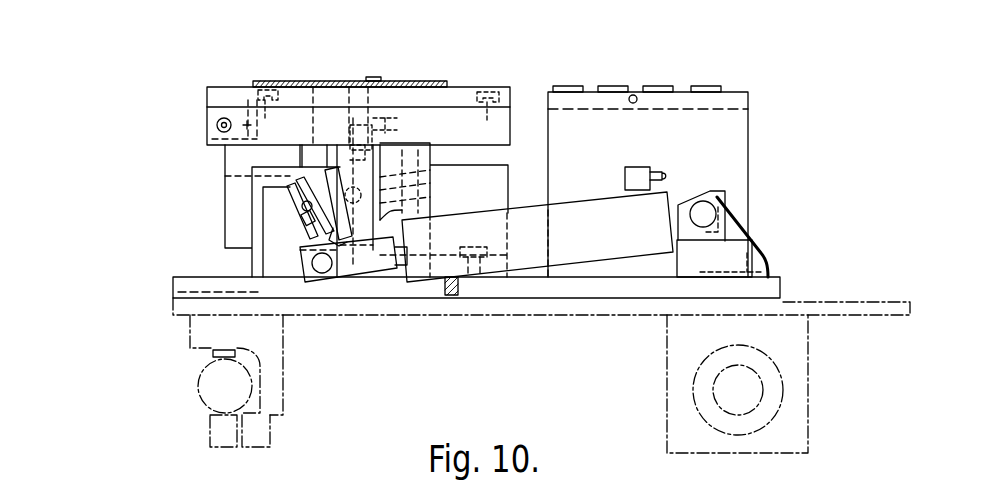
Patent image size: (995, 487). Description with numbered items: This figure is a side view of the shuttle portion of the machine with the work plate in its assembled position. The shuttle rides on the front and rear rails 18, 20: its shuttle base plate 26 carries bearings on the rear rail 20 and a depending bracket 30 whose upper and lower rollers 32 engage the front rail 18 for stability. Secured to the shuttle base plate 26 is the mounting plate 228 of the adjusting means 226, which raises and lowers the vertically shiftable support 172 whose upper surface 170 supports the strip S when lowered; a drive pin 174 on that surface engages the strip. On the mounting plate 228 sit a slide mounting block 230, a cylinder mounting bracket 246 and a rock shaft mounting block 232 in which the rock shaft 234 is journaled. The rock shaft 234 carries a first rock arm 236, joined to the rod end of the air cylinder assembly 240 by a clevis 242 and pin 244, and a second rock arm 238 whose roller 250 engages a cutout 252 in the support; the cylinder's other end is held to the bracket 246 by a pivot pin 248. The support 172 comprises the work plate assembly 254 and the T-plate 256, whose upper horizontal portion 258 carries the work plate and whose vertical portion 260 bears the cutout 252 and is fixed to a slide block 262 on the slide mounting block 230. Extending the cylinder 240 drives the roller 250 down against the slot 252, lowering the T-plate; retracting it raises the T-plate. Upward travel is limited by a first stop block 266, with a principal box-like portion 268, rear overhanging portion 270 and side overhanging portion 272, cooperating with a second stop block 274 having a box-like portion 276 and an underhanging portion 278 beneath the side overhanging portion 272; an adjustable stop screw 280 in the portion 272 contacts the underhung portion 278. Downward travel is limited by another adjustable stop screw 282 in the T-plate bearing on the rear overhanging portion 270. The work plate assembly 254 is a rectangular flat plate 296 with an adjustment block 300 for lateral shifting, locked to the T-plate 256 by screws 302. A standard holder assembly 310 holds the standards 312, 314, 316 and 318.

The upper surface 170 is at (224, 87).
The vertically shiftable support 172 is at (195, 97).
The drive pin 174 is at (374, 78).
The strip of material S is at (301, 80).
The front rail 18 is at (202, 378).
The rear rail 20 is at (766, 397).
The shuttle base plate 26 is at (580, 314).
The depending bracket 30 is at (287, 378).
The upper and lower rollers 32 is at (210, 350).
The adjusting means 226 is at (805, 263).
The mounting plate 228 is at (514, 298).
The slide mounting block 230 is at (508, 184).
The rock shaft mounting block 232 is at (267, 264).
The rock shaft 234 is at (298, 207).
The first rock arm 236 is at (302, 238).
The second rock arm 238 is at (322, 140).
The air cylinder assembly 240 is at (586, 192).
The clevis 242 is at (351, 296).
The pin 244 is at (314, 298).
The cylinder mounting bracket 246 is at (762, 254).
The pivot pin 248 is at (723, 199).
The roller 250 is at (430, 188).
The cutout 252 is at (430, 174).
The work plate assembly 254 is at (456, 47).
The T-plate 256 is at (525, 111).
The upper horizontal portion 258 is at (510, 137).
The vertical portion 260 is at (430, 201).
The slide block 262 is at (430, 157).
The first stop block 266 is at (236, 217).
The principal box-like portion 268 is at (264, 234).
The rear overhanging portion 270 is at (380, 148).
The side overhanging portion 272 is at (304, 222).
The second stop block 274 is at (203, 152).
The principal box-like portion 276 is at (234, 160).
The underhanging portion 278 is at (356, 283).
The adjustable stop screw 280 is at (226, 181).
The adjustable stop screw 282 is at (378, 135).
The flat plate stock material 296 is at (207, 93).
The adjustment block 300 is at (257, 150).
The screws 302 is at (265, 88).
The standard holder assembly 310 is at (760, 114).
The standard 312 is at (570, 86).
The standard 314 is at (623, 68).
The standard 316 is at (658, 86).
The standard 318 is at (717, 86).